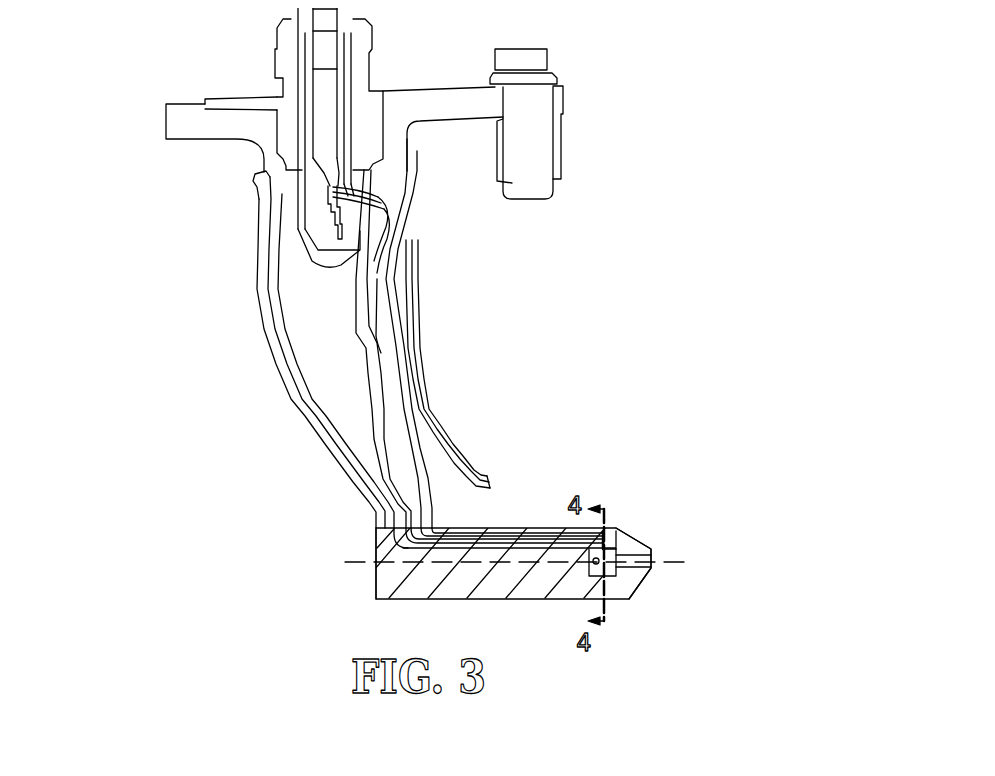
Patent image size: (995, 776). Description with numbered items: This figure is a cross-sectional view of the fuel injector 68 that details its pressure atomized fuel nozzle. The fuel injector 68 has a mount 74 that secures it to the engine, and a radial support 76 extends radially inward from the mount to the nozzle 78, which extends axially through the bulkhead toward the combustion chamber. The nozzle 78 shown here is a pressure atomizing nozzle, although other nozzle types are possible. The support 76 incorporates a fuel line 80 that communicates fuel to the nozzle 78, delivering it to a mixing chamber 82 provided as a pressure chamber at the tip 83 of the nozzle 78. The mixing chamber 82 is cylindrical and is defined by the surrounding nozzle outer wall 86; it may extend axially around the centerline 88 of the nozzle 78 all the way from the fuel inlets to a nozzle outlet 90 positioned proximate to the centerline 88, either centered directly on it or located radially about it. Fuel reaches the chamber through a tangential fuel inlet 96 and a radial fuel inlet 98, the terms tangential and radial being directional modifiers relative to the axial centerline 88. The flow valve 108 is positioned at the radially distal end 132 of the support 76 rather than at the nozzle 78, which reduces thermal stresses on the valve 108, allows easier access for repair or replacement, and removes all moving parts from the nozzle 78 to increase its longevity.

The fuel injector 68 is at (639, 114).
The mount 74 is at (417, 103).
The radial support 76 is at (259, 298).
The nozzle 78 is at (521, 490).
The fuel line 80 is at (385, 398).
The mixing chamber 82 is at (609, 560).
The tip 83 is at (607, 515).
The nozzle outer wall 86 is at (485, 590).
The centerline 88 is at (365, 554).
The nozzle outlet 90 is at (640, 556).
The tangential fuel inlet 96 is at (603, 541).
The radial fuel inlet 98 is at (590, 557).
The flow valve 108 is at (296, 240).
The radially distal end 132 is at (184, 148).